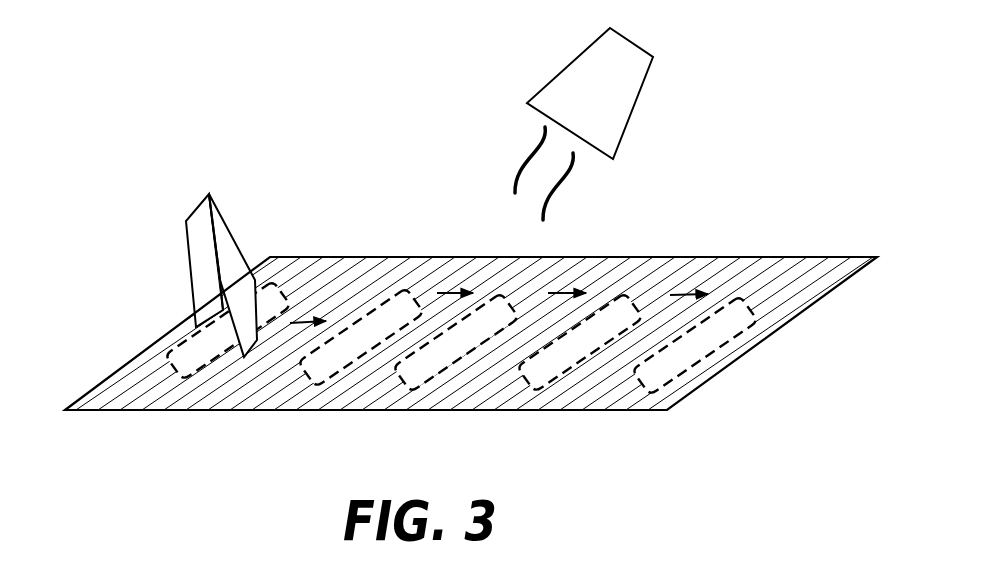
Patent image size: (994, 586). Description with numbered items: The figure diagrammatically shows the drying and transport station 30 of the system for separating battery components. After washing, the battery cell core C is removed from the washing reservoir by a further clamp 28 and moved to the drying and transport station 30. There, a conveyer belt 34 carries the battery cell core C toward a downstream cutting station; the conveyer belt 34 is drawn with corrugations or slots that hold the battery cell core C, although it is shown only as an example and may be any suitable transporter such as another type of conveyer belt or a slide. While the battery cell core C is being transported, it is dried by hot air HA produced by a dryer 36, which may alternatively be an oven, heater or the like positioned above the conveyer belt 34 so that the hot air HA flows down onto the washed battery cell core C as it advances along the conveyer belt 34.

The clamp 28 is at (228, 222).
The drying and transport station 30 is at (834, 81).
The conveyer belt 34 is at (472, 385).
The dryer 36 is at (647, 81).
The hot air HA is at (516, 147).
The battery cell core C is at (176, 368).